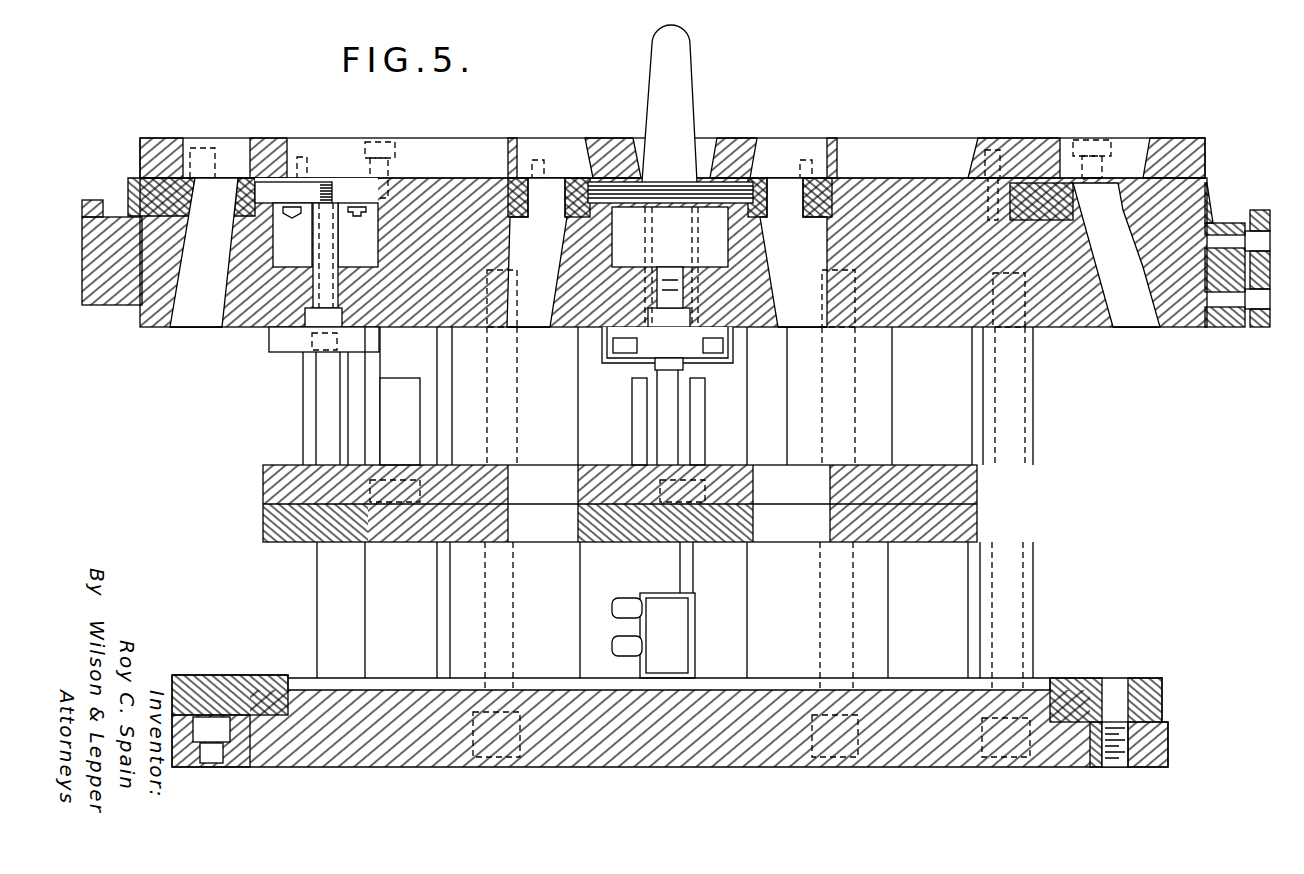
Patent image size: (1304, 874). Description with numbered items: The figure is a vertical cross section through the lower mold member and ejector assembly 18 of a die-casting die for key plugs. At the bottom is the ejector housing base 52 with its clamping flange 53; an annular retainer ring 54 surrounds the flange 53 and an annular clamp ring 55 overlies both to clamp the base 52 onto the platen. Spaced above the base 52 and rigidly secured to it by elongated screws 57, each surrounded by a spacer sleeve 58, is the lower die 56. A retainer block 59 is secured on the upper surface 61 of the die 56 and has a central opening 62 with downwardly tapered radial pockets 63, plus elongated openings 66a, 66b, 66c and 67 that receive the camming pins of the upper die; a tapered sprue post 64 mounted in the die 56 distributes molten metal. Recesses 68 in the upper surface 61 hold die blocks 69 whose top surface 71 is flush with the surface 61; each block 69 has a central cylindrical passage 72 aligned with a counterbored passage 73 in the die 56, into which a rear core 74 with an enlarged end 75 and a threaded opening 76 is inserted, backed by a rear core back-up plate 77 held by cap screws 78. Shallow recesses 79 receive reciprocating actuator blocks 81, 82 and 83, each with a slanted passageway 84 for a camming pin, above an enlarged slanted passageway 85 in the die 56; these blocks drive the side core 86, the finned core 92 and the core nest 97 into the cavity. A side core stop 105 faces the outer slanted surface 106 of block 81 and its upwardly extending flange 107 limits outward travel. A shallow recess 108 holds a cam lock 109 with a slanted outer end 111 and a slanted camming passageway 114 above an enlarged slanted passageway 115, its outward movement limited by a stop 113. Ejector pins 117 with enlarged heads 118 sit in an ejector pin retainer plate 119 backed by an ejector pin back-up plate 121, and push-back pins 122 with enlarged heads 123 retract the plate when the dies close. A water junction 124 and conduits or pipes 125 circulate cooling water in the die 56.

The lower mold member and ejector assembly 18 is at (189, 455).
The ejector housing base 52 is at (396, 766).
The clamping flange 53 is at (267, 767).
The annular retainer ring 54 is at (184, 767).
The annular clamp ring 55 is at (1164, 714).
The lower die 56 is at (937, 324).
The elongated screws 57 is at (515, 606).
The spacer sleeve 58 is at (320, 590).
The retainer block 59 is at (278, 156).
The upper surface 61 is at (472, 180).
The central opening 62 is at (974, 168).
The radial pockets 63 is at (629, 178).
The sprue post 64 is at (688, 99).
The elongated opening 66a is at (236, 152).
The elongated opening 66b is at (538, 160).
The elongated opening 66c is at (823, 162).
The elongated opening 67 is at (1124, 150).
The recesses 68 is at (275, 278).
The die blocks 69 is at (381, 252).
The top surface 71 is at (350, 178).
The central vertical cylindrical passage 72 is at (318, 242).
The counterbored passage 73 is at (684, 297).
The rear core 74 is at (328, 239).
The enlarged end 75 is at (343, 314).
The threaded opening 76 is at (340, 292).
The rear core back-up plate 77 is at (268, 343).
The cap screws 78 is at (313, 298).
The shallow recesses 79 is at (270, 210).
The actuator block 81 is at (152, 180).
The actuator block 82 is at (520, 184).
The actuator block 83 is at (812, 186).
The slanted passageway 84 is at (215, 210).
The enlarged slanted passageway 85 is at (190, 318).
The side core 86 is at (300, 186).
The core 92 is at (600, 162).
The core nest 97 is at (750, 170).
The side core stop 105 is at (82, 302).
The outer slanted surface 106 is at (156, 192).
The upwardly extending flange 107 is at (88, 214).
The shallow recess 108 is at (1052, 222).
The cam lock 109 is at (1190, 179).
The slanted outer end 111 is at (1220, 203).
The stop 113 is at (1268, 318).
The slanted camming passageway 114 is at (1110, 218).
The enlarged slanted passageway 115 is at (1136, 330).
The ejector pins 117 is at (340, 398).
The enlarged heads 118 is at (270, 492).
The ejector pin retainer plate 119 is at (500, 470).
The ejector pin back-up plate 121 is at (262, 528).
The push-back pins 122 is at (404, 384).
The enlarged heads 123 is at (443, 464).
The water junction 124 is at (690, 620).
The conduits or pipes 125 is at (680, 568).